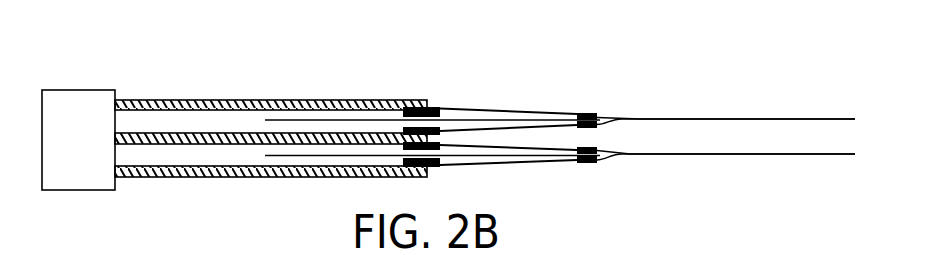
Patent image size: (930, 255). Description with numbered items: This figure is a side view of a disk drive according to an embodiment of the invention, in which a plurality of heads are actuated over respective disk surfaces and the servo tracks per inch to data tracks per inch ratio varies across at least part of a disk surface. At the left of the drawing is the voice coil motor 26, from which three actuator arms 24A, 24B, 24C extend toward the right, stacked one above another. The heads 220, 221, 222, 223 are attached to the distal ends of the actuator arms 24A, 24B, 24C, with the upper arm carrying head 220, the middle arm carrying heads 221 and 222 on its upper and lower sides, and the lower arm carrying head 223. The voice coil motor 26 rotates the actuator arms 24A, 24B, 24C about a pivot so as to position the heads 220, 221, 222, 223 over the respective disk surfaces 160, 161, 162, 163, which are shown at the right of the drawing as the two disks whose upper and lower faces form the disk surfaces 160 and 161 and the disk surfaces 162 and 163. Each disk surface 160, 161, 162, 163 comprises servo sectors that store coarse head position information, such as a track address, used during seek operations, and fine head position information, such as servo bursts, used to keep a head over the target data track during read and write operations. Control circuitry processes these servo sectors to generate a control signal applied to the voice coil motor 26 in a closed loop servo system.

The voice coil motor 26 is at (42, 138).
The actuator arm 24A is at (170, 100).
The actuator arm 24B is at (210, 133).
The actuator arm 24C is at (247, 166).
The head 220 is at (597, 114).
The head 221 is at (620, 119).
The head 222 is at (621, 154).
The head 223 is at (597, 158).
The disk surface 160 is at (743, 119).
The disk surface 161 is at (783, 119).
The disk surface 162 is at (787, 154).
The disk surface 163 is at (790, 154).